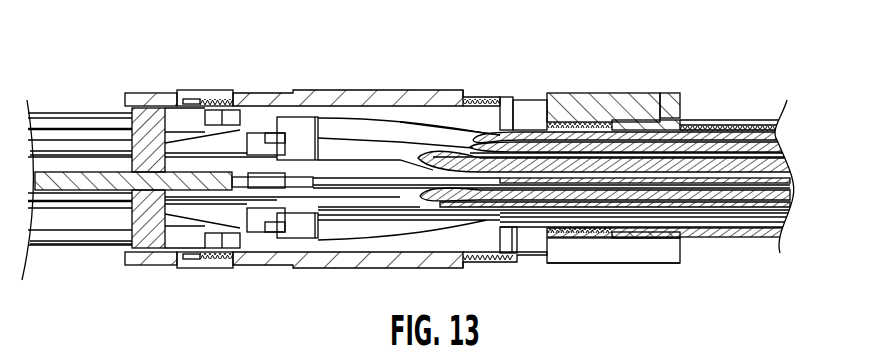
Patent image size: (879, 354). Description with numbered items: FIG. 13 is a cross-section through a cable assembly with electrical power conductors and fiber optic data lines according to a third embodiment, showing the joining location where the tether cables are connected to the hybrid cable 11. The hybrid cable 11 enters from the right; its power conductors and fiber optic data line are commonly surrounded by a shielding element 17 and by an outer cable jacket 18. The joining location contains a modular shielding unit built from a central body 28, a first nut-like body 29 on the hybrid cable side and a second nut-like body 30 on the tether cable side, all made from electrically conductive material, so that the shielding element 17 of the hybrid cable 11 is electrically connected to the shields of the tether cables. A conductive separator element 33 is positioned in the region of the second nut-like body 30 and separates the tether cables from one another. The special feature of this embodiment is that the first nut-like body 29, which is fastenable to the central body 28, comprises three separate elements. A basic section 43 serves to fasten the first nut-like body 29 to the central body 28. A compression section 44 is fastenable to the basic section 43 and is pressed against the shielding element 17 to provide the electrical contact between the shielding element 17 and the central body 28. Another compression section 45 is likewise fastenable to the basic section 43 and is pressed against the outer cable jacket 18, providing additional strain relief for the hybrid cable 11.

The hybrid cable 11 is at (625, 156).
The shielding element 17 is at (563, 118).
The outer cable jacket 18 is at (643, 118).
The central body 28 is at (360, 90).
The first nut-like body 29 is at (667, 272).
The second nut-like body 30 is at (158, 92).
The separator element 33 is at (133, 142).
The basic section 43 is at (573, 248).
The compression section 44 is at (586, 110).
The compression section 45 is at (667, 90).